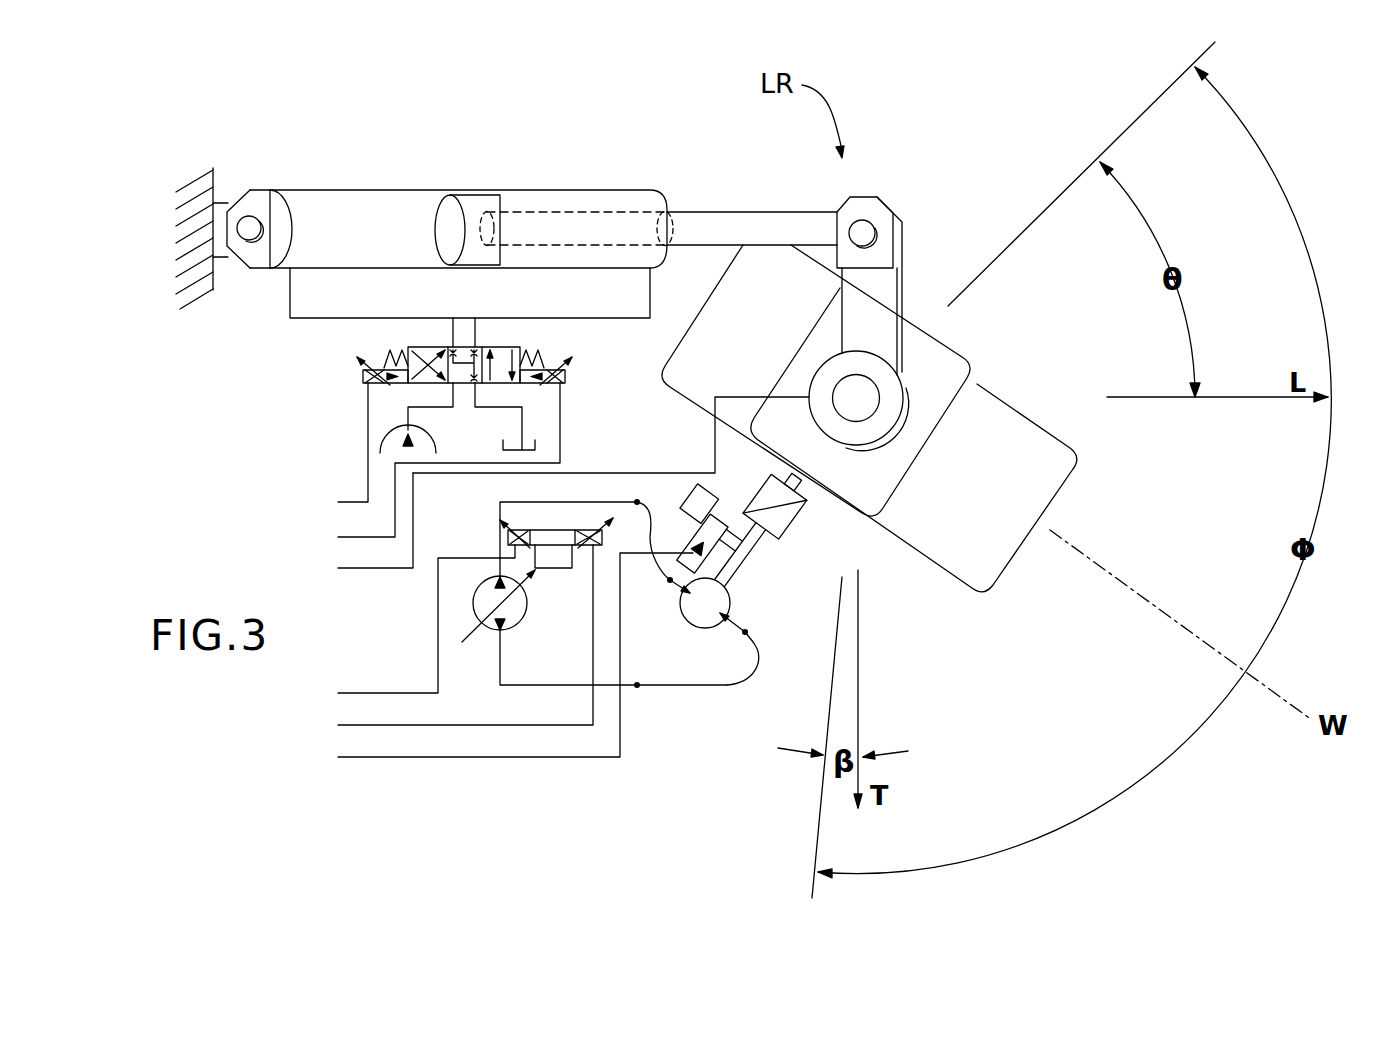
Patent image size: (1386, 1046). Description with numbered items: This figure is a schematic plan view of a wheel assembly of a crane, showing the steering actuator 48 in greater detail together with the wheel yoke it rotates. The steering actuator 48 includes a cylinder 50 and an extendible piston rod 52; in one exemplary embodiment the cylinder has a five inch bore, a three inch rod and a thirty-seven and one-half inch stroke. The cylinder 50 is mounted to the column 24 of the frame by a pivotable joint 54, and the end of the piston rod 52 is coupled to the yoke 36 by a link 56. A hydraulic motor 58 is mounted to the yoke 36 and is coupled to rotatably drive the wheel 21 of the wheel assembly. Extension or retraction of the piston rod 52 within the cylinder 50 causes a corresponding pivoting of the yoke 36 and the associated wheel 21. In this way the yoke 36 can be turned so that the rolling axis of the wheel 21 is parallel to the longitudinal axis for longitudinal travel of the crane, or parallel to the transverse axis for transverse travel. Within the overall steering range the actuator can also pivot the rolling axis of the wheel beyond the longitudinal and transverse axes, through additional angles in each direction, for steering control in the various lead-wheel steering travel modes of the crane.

The wheel 21 is at (1013, 423).
The column 24 is at (213, 178).
The yoke 36 is at (940, 340).
The steering actuator 48 is at (368, 185).
The cylinder 50 is at (550, 190).
The piston rod 52 is at (725, 215).
The pivotable joint 54 is at (247, 232).
The link 56 is at (878, 295).
The hydraulic motor 58 is at (795, 540).